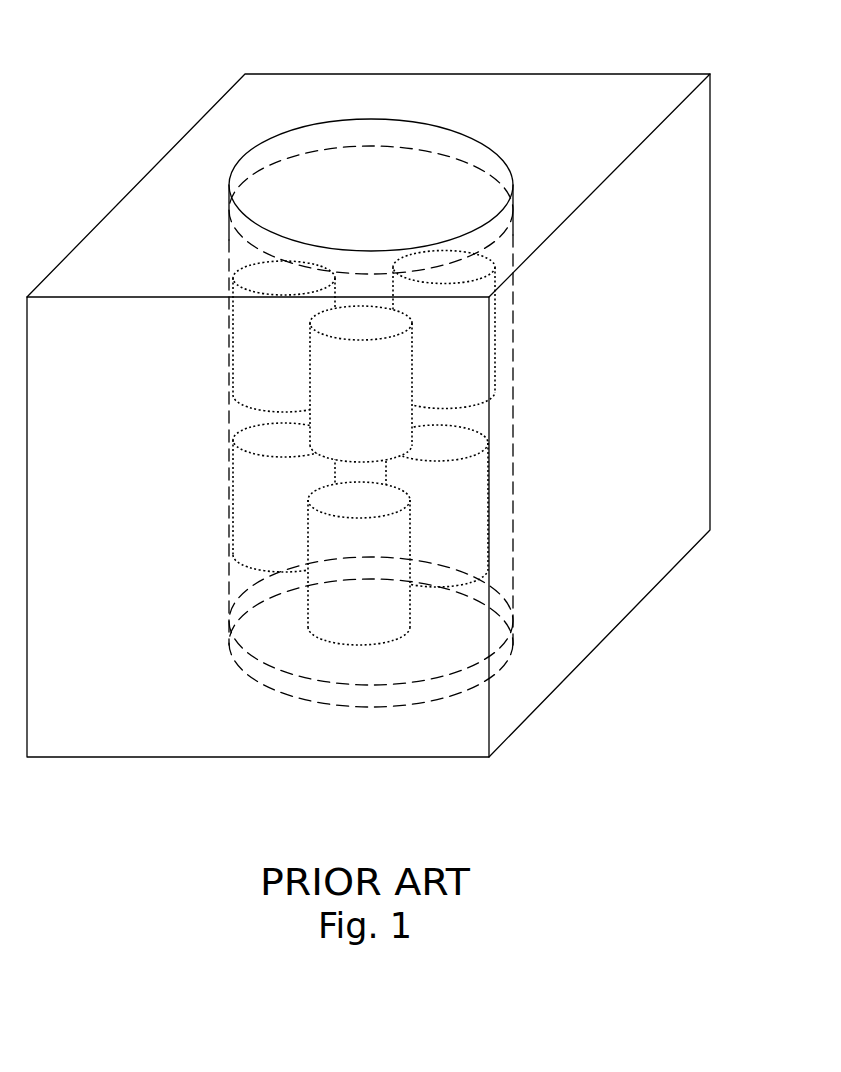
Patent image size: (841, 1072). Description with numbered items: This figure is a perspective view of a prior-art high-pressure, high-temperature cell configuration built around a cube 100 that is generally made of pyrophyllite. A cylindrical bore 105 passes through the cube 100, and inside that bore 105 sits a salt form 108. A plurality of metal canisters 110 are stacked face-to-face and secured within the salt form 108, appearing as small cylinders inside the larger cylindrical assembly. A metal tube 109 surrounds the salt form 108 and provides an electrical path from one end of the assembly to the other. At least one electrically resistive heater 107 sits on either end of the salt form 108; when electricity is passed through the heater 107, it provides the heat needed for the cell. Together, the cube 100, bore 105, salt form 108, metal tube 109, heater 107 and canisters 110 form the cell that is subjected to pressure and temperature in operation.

The cube 100 is at (675, 540).
The cylindrical bore 105 is at (317, 415).
The electrically resistive heater 107 is at (325, 138).
The salt form 108 is at (277, 632).
The metal tube 109 is at (227, 360).
The metal canisters 110 is at (263, 498).